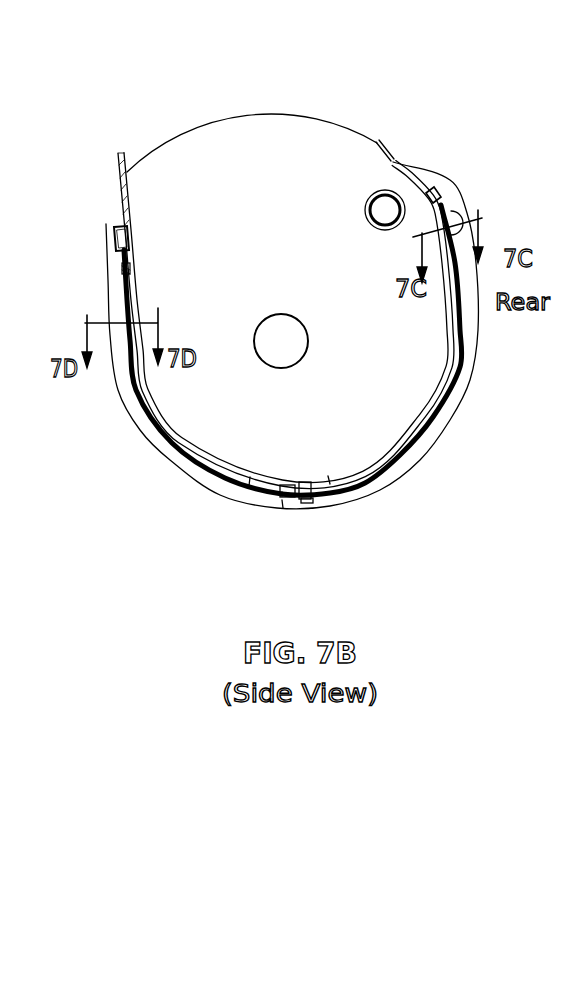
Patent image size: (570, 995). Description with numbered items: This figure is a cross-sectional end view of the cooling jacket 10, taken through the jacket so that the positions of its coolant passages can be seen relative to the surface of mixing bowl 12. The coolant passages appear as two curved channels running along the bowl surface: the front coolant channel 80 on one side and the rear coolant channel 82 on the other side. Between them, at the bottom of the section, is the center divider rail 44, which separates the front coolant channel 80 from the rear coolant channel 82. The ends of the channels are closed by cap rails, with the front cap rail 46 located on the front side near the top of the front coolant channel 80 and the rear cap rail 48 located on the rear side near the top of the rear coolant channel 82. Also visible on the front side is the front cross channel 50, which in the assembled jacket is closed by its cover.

The cooling jacket 10 is at (128, 80).
The surface of mixing bowl 12 is at (118, 178).
The center divider rail 44 is at (286, 503).
The front cap rail 46 is at (120, 268).
The rear cap rail 48 is at (434, 190).
The front cross channel 50 is at (114, 228).
The front coolant channel 80 is at (173, 443).
The rear coolant channel 82 is at (432, 417).